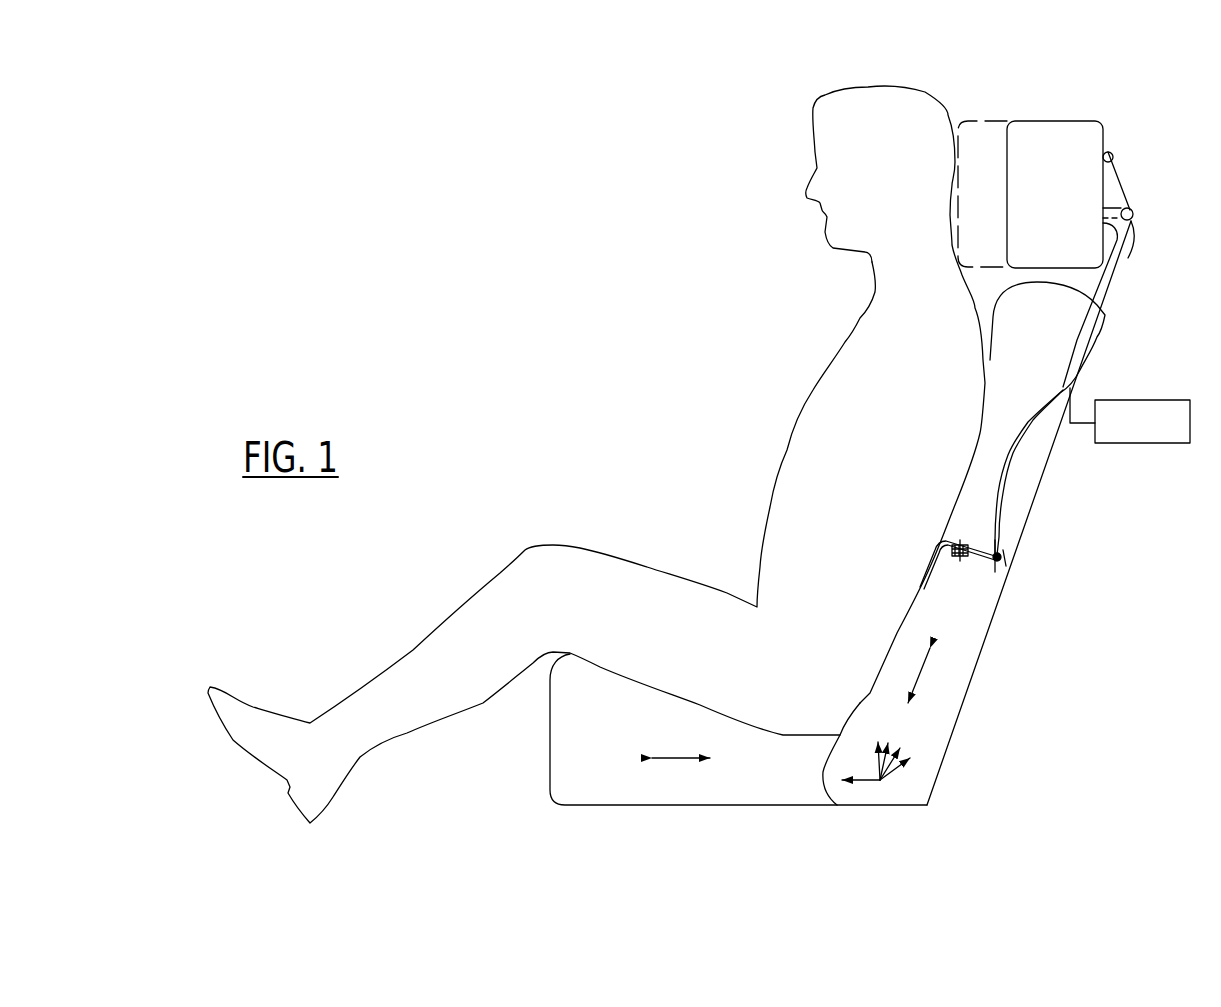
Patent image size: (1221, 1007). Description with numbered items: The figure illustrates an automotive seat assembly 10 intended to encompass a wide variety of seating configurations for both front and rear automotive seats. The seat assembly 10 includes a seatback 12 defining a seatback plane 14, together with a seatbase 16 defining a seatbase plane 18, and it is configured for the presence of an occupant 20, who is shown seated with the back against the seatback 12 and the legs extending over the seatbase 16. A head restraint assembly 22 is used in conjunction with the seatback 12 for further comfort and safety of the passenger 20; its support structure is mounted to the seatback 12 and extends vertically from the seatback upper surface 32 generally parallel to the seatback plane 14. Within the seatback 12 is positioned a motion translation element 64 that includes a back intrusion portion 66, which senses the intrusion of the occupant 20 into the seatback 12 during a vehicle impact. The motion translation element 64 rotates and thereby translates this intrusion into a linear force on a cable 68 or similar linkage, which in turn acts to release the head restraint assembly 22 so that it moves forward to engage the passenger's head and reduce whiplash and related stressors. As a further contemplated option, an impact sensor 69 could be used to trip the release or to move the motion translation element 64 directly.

The automotive seat assembly 10 is at (457, 182).
The seatback 12 is at (1082, 383).
The seatback plane 14 is at (920, 675).
The seatbase 16 is at (662, 792).
The seatbase plane 18 is at (680, 758).
The occupant 20 is at (901, 413).
The head restraint assembly 22 is at (1070, 253).
The seatback upper surface 32 is at (1087, 293).
The motion translation element 64 is at (983, 610).
The back intrusion portion 66 is at (928, 557).
The cable 68 is at (1028, 445).
The impact sensor 69 is at (1143, 398).